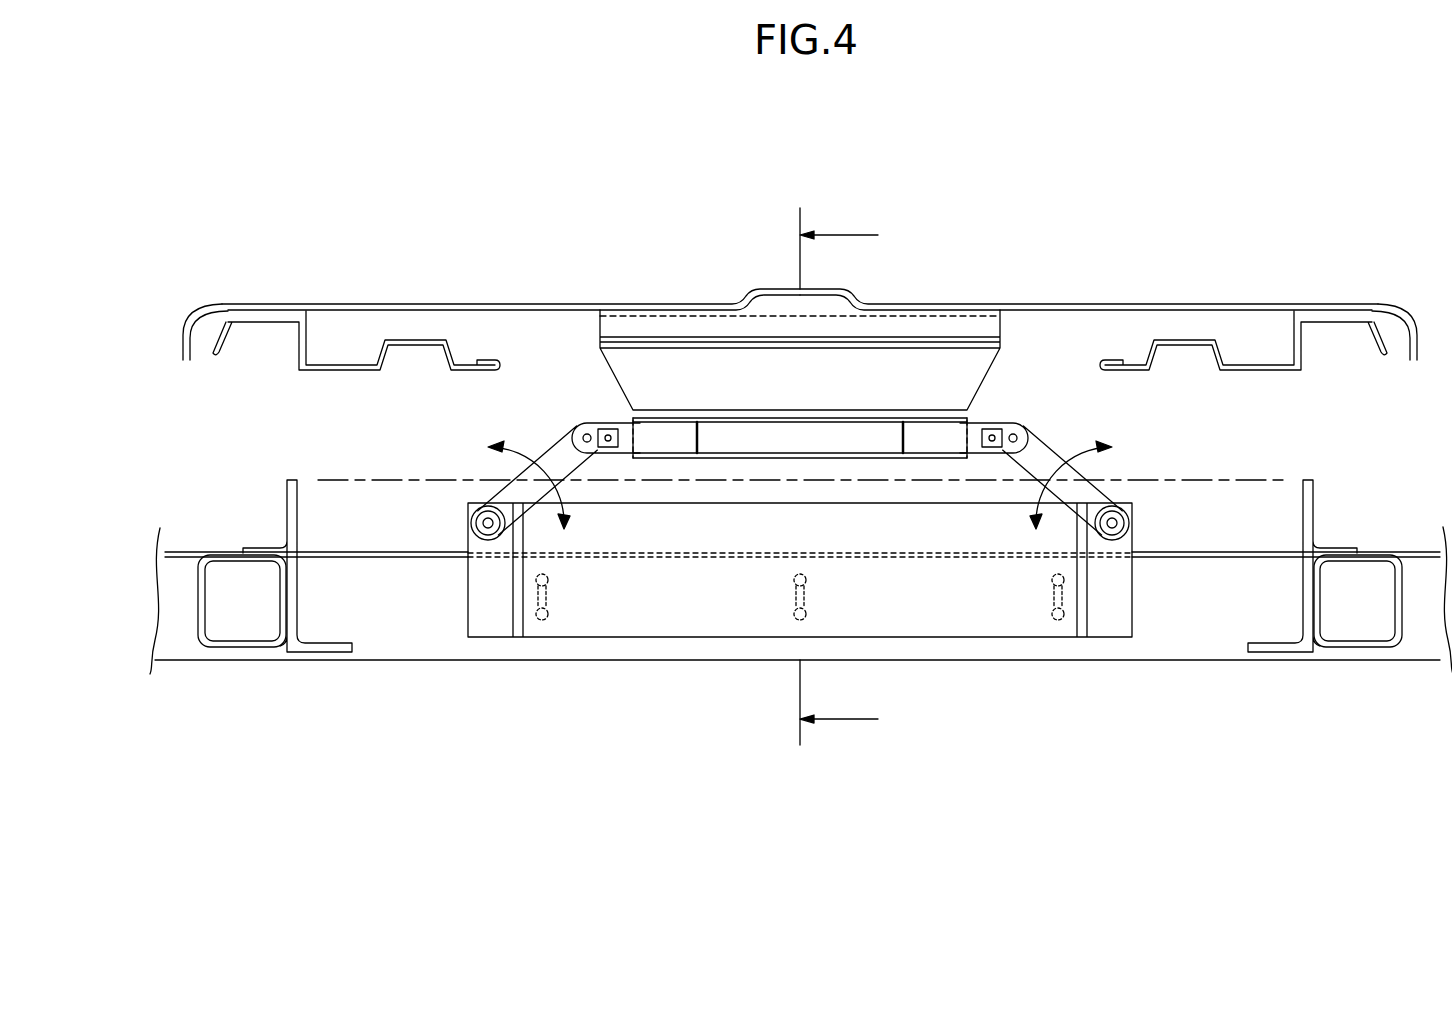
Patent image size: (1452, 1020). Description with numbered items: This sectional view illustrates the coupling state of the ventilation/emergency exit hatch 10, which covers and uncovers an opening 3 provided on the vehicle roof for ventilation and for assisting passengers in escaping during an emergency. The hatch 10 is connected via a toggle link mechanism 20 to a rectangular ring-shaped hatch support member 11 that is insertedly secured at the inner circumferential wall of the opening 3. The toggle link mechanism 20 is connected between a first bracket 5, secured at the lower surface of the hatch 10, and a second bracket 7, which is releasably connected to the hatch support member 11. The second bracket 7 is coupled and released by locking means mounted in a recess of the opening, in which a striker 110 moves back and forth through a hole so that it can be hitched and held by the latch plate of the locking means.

The opening 3 is at (418, 622).
The first bracket 5 is at (932, 370).
The second bracket 7 is at (712, 613).
The hatch 10 is at (570, 303).
The hatch support member 11 is at (293, 503).
The toggle link mechanism 20 is at (1100, 469).
The striker 110 is at (548, 582).